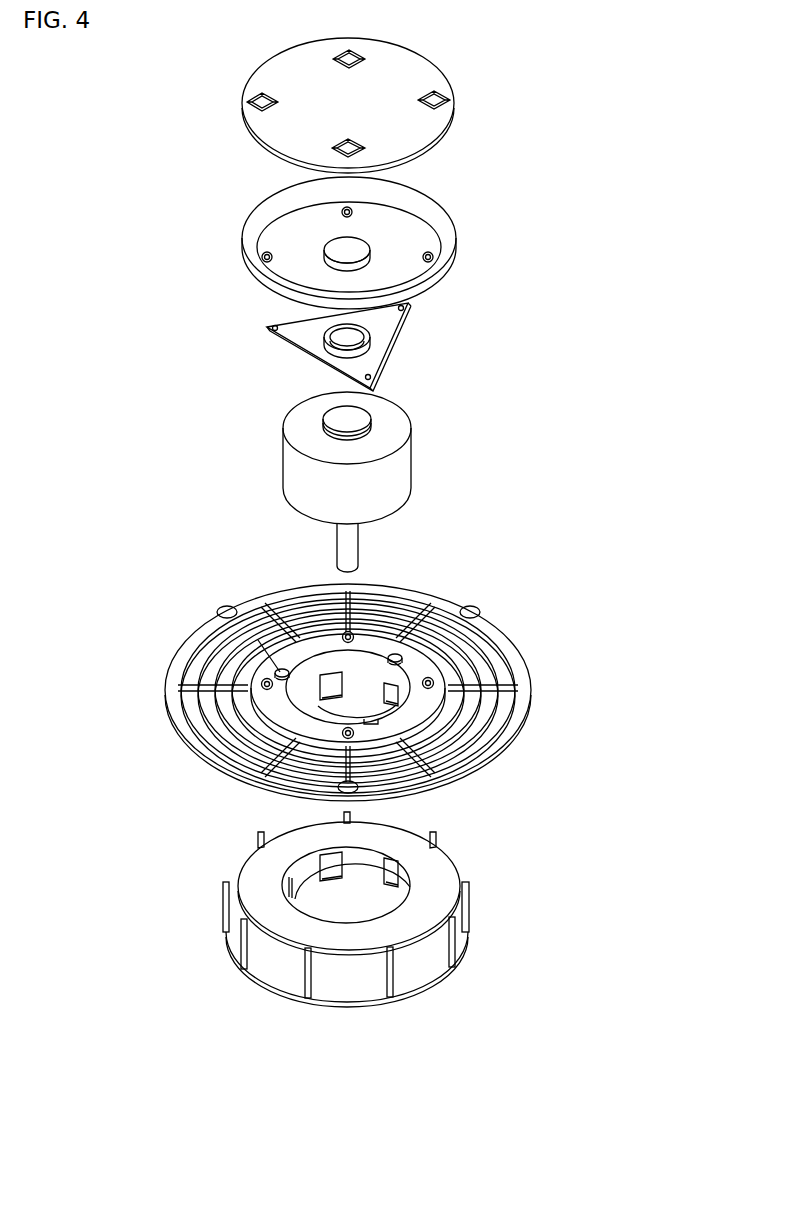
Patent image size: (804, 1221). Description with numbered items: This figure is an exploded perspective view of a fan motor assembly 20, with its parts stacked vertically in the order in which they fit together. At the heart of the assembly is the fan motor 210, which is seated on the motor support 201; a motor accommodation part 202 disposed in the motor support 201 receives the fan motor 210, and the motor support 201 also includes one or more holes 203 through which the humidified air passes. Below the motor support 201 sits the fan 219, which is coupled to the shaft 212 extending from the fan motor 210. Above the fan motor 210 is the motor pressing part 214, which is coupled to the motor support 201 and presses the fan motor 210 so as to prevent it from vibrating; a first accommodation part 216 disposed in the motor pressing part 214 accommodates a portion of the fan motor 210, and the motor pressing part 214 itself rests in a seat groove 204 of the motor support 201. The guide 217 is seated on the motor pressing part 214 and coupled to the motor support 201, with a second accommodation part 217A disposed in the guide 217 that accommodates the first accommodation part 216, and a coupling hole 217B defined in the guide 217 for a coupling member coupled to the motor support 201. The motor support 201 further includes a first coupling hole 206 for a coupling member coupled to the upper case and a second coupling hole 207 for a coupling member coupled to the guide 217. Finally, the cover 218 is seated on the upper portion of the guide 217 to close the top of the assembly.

The fan assembly 20 is at (112, 787).
The motor support 201 is at (351, 674).
The motor accommodation part 202 is at (402, 692).
The holes 203 is at (502, 663).
The seat groove 204 is at (226, 611).
The first coupling hole 206 is at (474, 613).
The second coupling hole 207 is at (266, 680).
The fan motor 210 is at (432, 440).
The shaft 212 is at (353, 542).
The motor pressing part 214 is at (365, 351).
The first accommodation part 216 is at (323, 345).
The guide 217 is at (362, 243).
The second accommodation part 217A is at (355, 242).
The coupling hole 217B is at (264, 256).
The cover 218 is at (433, 77).
The fan 219 is at (345, 987).